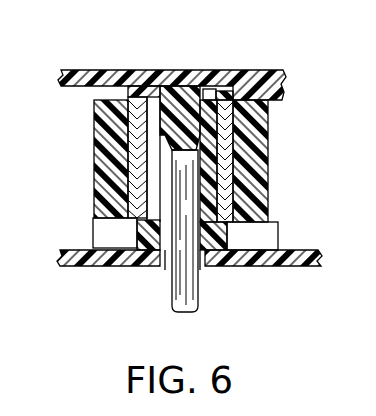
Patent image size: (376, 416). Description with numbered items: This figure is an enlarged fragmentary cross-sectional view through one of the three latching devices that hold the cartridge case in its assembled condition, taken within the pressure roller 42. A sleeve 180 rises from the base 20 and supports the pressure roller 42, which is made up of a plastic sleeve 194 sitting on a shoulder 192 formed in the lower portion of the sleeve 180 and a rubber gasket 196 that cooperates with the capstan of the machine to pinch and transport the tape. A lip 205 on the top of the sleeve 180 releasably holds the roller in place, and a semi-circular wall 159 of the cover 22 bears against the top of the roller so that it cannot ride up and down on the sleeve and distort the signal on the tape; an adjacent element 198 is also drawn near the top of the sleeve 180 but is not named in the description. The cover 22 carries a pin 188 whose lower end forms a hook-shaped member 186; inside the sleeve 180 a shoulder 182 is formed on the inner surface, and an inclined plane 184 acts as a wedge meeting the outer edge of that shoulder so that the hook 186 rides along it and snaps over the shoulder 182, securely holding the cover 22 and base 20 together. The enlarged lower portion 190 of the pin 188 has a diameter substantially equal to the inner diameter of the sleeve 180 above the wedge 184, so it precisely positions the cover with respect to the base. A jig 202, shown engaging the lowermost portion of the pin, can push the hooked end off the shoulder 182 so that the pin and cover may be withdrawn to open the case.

The base 20 is at (93, 254).
The cover 22 is at (186, 79).
The pressure roller 42 is at (94, 137).
The semi-circular wall 159 is at (130, 93).
The sleeve 180 is at (152, 256).
The shoulder 182 is at (231, 237).
The inclined plane 184 is at (212, 172).
The hook-shaped member 186 is at (177, 220).
The pin 188 is at (98, 172).
The lower portion 190 is at (175, 112).
The shoulder 192 is at (92, 208).
The plastic sleeve 194 is at (256, 121).
The rubber gasket 196 is at (233, 165).
The retaining ring 198 is at (229, 97).
The jig 202 is at (200, 297).
The lip 205 is at (211, 91).